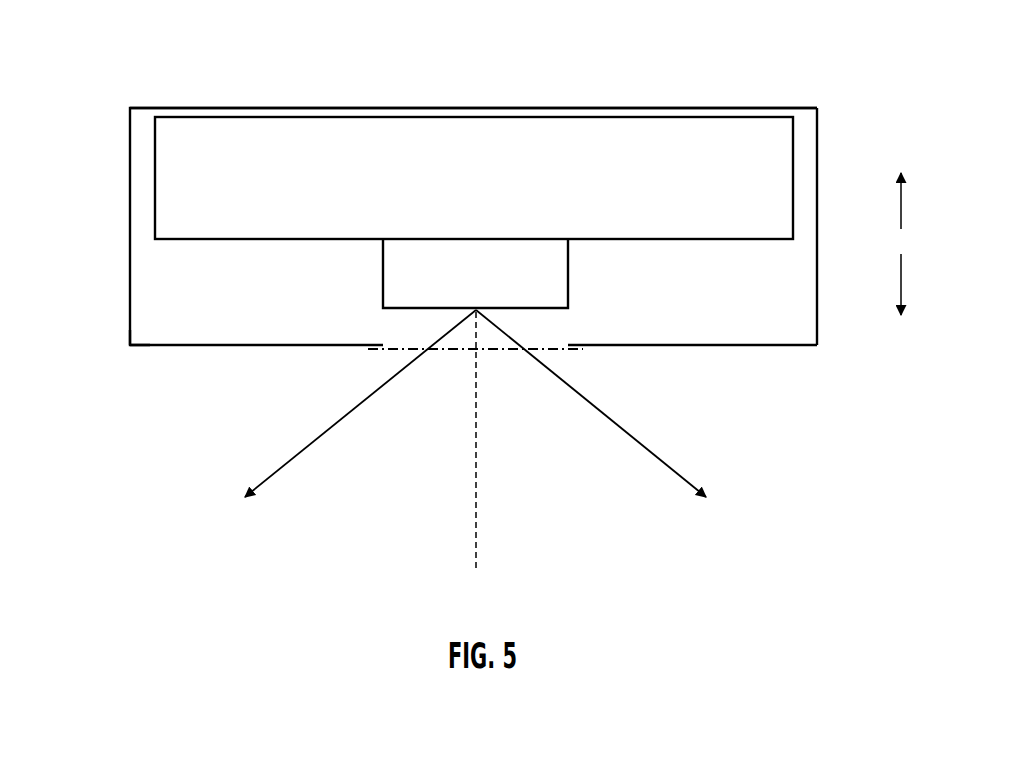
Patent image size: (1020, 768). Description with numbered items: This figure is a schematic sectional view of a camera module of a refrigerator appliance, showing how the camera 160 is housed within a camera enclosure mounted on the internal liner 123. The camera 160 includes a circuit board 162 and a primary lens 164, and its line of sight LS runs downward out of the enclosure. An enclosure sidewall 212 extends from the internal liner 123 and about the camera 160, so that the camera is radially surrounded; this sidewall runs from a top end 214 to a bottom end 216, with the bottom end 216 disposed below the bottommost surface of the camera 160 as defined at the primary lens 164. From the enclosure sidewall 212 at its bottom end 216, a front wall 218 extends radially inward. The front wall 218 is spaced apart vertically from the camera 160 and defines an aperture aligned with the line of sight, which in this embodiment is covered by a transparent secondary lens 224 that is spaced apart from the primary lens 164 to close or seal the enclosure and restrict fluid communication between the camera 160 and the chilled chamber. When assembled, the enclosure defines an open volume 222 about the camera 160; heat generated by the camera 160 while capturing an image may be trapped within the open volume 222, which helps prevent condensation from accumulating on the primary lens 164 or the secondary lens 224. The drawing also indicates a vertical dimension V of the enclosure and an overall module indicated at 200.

The camera 160 is at (463, 311).
The housing assembly 200 is at (443, 225).
The top end 214 is at (126, 78).
The internal liner 123 is at (670, 108).
The enclosure sidewall 212 is at (818, 296).
The front wall 218 is at (718, 347).
The bottom end 216 is at (140, 359).
The circuit board 162 is at (188, 207).
The primary lens 164 is at (400, 276).
The open volume 222 is at (689, 296).
The secondary lens 224 is at (568, 349).